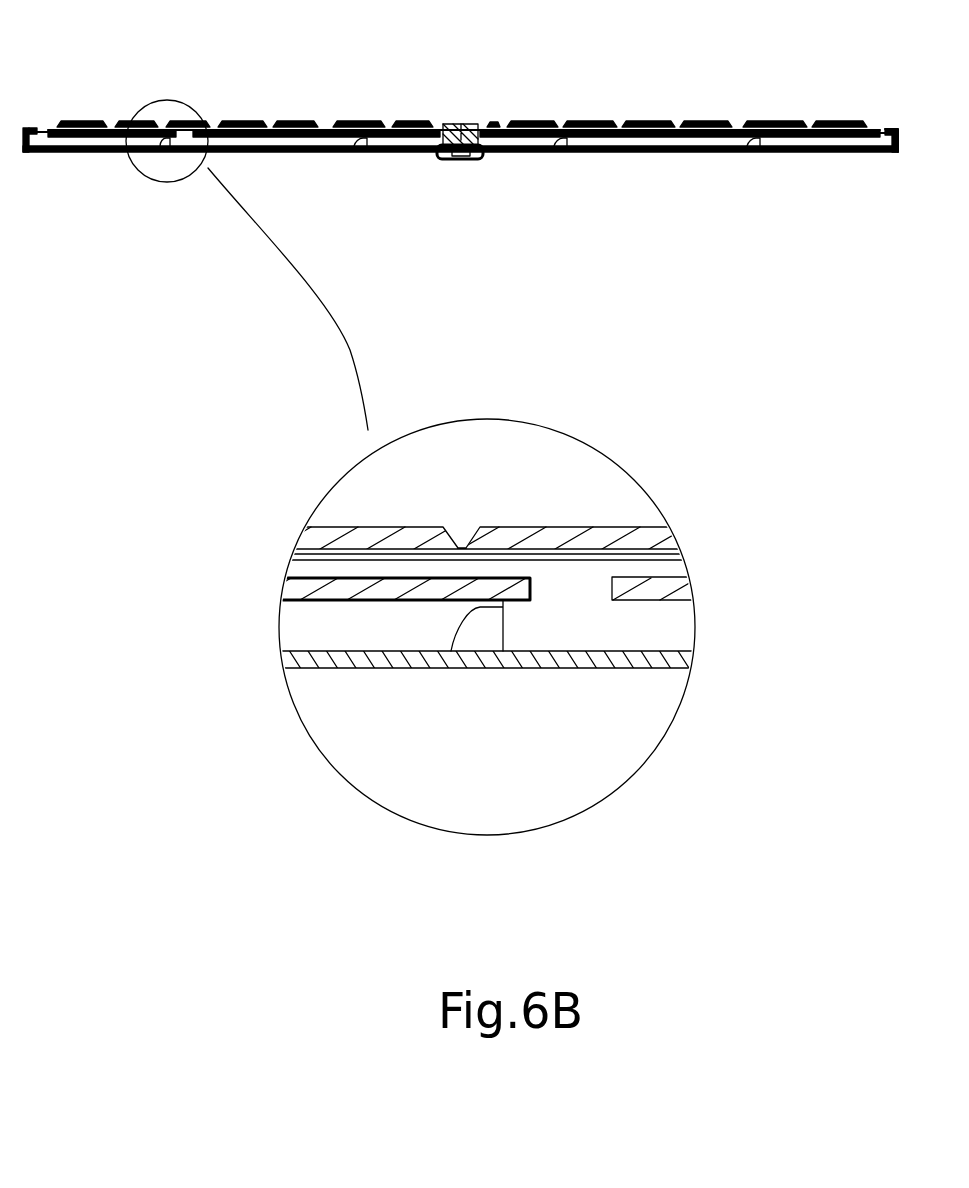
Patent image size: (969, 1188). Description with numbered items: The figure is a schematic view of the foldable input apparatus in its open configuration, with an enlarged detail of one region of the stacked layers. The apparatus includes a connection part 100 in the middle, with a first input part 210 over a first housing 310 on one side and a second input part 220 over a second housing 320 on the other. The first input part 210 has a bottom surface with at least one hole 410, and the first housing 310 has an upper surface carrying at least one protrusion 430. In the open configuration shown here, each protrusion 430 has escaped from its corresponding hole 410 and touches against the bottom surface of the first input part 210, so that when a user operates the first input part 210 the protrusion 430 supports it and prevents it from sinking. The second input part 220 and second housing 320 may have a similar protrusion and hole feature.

The connection part 100 is at (461, 124).
The first input part 210 is at (90, 121).
The second input part 220 is at (708, 122).
The first housing 310 is at (47, 152).
The second housing 320 is at (846, 152).
The hole 410 is at (185, 135).
The protrusion 430 is at (160, 146).